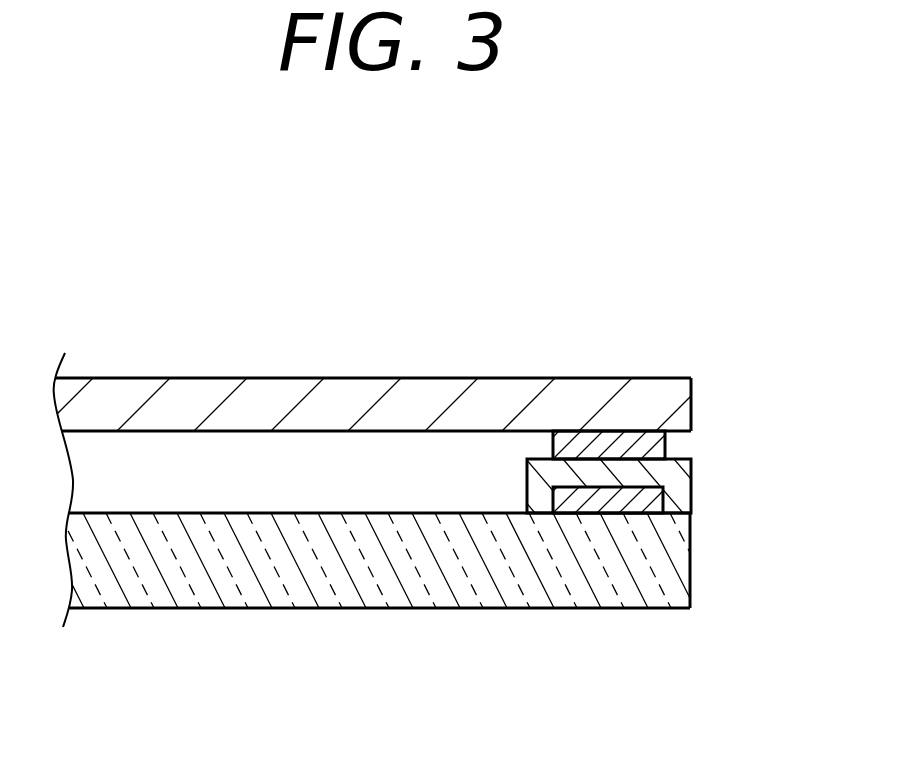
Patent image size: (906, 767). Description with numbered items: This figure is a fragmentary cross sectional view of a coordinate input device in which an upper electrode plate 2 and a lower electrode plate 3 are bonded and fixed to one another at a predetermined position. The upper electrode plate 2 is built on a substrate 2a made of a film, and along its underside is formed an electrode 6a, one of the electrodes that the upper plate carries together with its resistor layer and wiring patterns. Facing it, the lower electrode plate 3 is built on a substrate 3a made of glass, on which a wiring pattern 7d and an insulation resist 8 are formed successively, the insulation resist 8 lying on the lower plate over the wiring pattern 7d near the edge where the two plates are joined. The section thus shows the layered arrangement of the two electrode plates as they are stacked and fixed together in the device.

The upper electrode plate 2 is at (427, 344).
The substrate 2a is at (693, 392).
The lower electrode plate 3 is at (423, 624).
The substrate 3a is at (692, 583).
The electrode 6a is at (607, 440).
The wiring pattern 7d is at (687, 508).
The insulation resist 8 is at (683, 492).